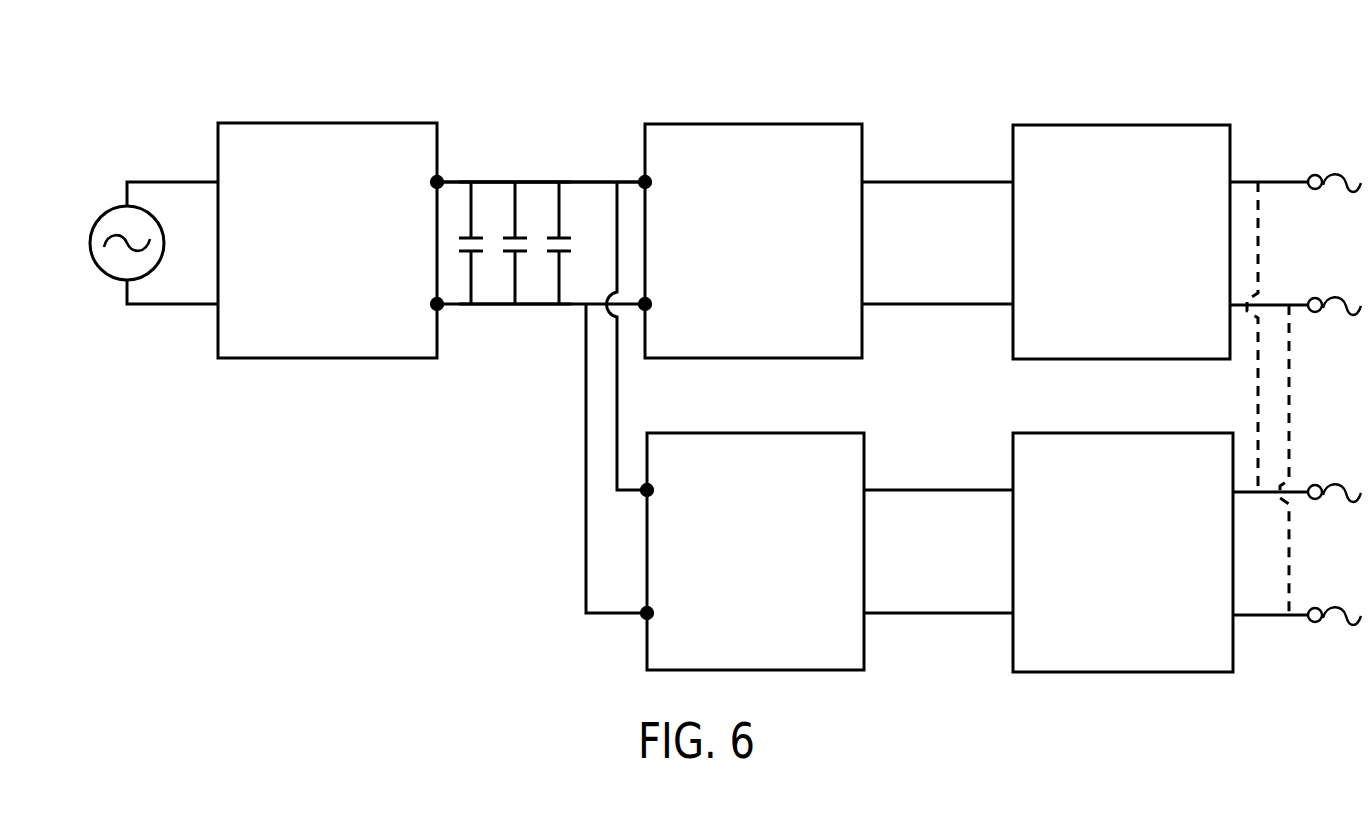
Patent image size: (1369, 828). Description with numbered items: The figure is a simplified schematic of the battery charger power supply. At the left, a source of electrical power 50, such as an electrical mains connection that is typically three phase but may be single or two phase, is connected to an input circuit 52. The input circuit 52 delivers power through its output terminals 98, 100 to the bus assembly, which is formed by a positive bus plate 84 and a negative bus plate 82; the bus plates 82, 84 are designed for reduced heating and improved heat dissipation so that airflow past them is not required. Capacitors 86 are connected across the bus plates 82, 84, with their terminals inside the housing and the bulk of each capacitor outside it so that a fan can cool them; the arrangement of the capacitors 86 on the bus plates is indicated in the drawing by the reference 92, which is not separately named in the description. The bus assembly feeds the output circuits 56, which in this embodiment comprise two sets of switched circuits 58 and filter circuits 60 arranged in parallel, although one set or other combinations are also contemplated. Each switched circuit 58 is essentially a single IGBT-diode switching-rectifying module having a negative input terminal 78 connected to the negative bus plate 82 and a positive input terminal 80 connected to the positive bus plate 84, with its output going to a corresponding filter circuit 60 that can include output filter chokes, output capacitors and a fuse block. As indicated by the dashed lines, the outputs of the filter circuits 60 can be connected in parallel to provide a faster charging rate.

The source of electrical power 50 is at (92, 242).
The input circuit 52 is at (305, 126).
The output circuits 56 is at (893, 62).
The switched circuits 58 is at (795, 360).
The filter circuits 60 is at (1143, 360).
The negative input terminal 78 is at (658, 302).
The positive input terminal 80 is at (652, 178).
The negative bus plate 82 is at (542, 305).
The positive bus plate 84 is at (582, 178).
The capacitors 86 is at (473, 285).
The energy storage section 92 is at (540, 118).
The output terminal 98 is at (430, 182).
The output terminal 100 is at (433, 303).